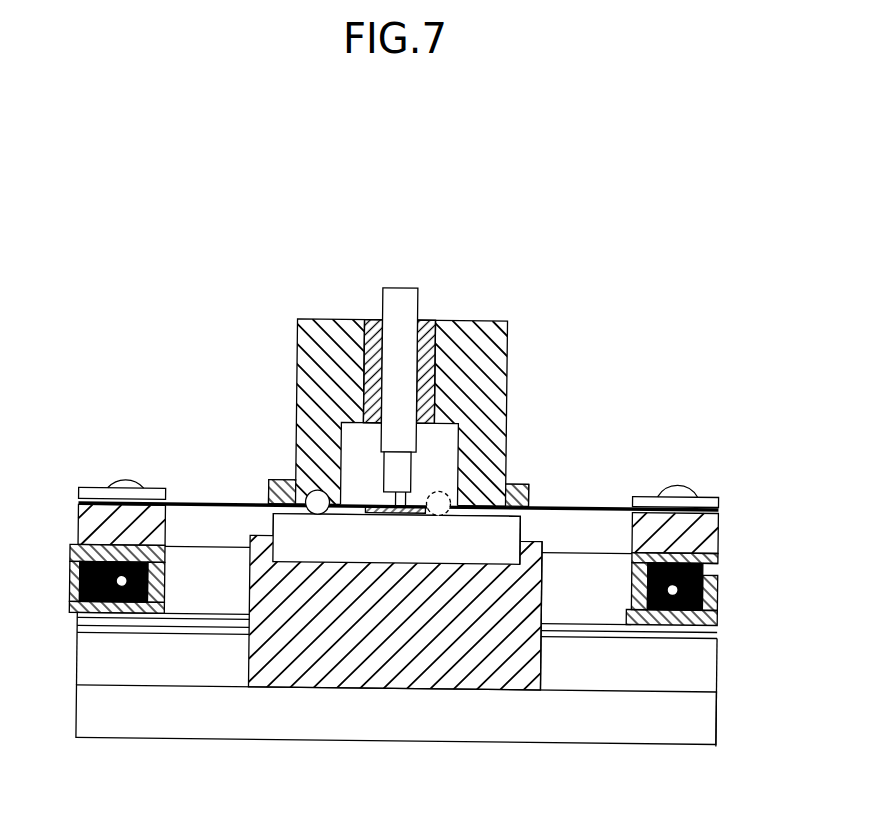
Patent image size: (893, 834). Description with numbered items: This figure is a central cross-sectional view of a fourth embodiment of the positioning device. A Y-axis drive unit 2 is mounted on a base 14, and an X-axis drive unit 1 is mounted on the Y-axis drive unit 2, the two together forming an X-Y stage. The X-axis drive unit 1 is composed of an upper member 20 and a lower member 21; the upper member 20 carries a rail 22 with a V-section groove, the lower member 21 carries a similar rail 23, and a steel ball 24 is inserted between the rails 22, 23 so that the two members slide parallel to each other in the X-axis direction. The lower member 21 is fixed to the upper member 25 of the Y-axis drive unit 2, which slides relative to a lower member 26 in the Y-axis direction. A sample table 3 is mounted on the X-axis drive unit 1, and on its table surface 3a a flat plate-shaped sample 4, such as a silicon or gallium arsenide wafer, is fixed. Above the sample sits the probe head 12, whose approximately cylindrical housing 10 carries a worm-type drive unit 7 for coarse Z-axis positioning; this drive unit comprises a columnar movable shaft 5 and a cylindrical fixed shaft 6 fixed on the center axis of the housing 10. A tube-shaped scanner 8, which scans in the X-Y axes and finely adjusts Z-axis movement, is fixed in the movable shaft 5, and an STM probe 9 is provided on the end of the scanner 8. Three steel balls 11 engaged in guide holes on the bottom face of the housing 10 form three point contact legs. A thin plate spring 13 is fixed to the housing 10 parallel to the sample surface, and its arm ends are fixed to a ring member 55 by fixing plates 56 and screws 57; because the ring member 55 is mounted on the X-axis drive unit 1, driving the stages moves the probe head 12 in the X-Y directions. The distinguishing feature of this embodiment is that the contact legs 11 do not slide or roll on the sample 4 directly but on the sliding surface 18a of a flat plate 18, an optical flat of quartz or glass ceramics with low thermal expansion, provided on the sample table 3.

The X-axis drive unit 1 is at (407, 679).
The Y-axis drive unit 2 is at (408, 676).
The sample table 3 is at (480, 680).
The table surface 3a is at (537, 540).
The sample 4 is at (292, 445).
The movable shaft 5 is at (394, 290).
The fixed shaft 6 is at (420, 320).
The worm-type drive unit 7 is at (428, 324).
The scanner 8 is at (402, 495).
The STM probe 9 is at (405, 508).
The housing 10 is at (498, 361).
The steel balls 11 is at (292, 494).
The probe head 12 is at (420, 351).
The thin plate spring 13 is at (180, 501).
The base 14 is at (377, 730).
The flat plate 18 is at (287, 535).
The sliding surface 18a is at (521, 516).
The upper member 20 is at (720, 557).
The lower member 21 is at (720, 590).
The rail 22 is at (150, 610).
The rail 23 is at (107, 615).
The steel ball 24 is at (130, 610).
The upper member 25 is at (720, 625).
The lower member 26 is at (712, 659).
The ring member 55 is at (720, 530).
The fixing plates 56 is at (718, 497).
The screws 57 is at (668, 480).